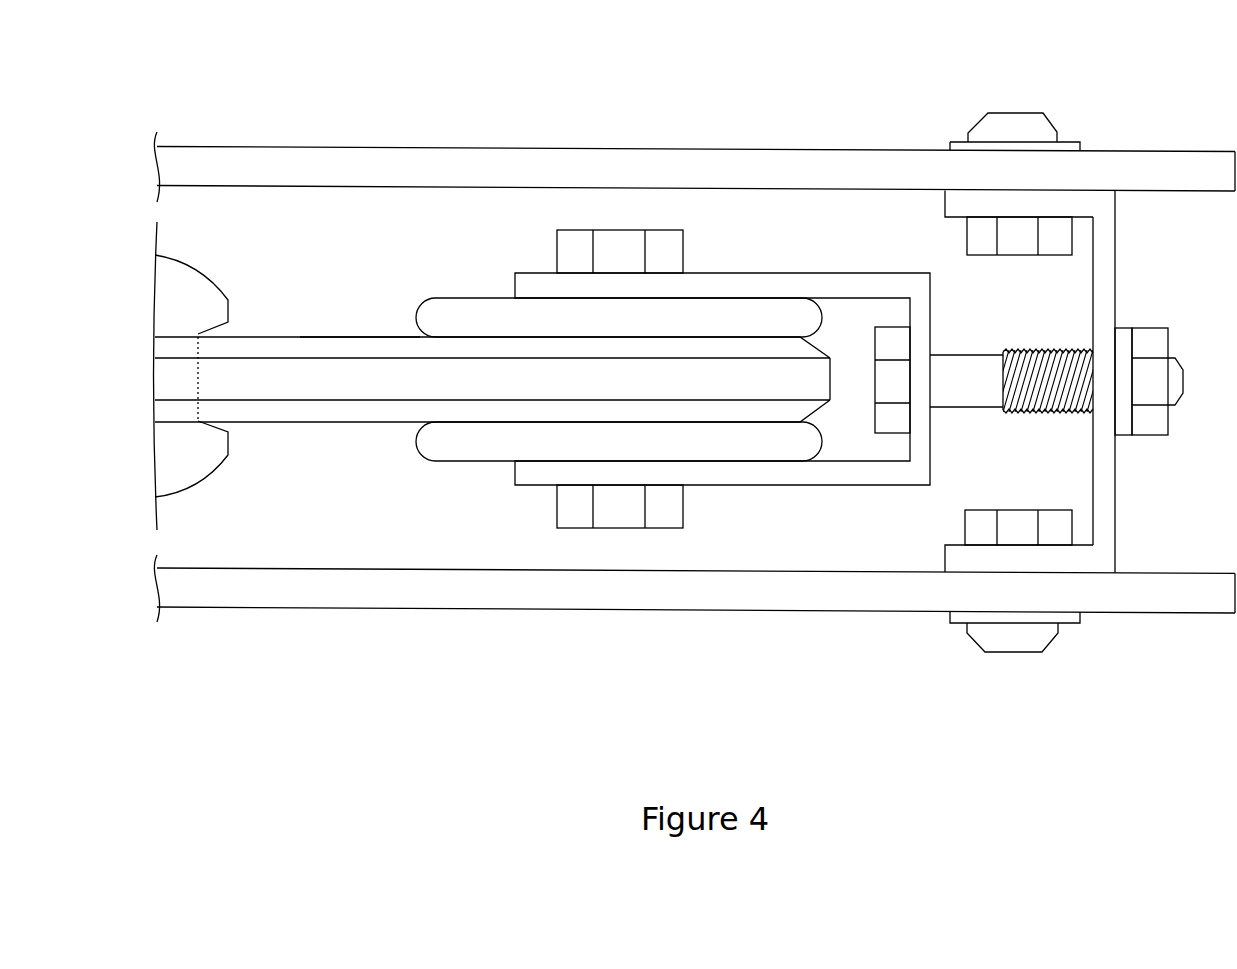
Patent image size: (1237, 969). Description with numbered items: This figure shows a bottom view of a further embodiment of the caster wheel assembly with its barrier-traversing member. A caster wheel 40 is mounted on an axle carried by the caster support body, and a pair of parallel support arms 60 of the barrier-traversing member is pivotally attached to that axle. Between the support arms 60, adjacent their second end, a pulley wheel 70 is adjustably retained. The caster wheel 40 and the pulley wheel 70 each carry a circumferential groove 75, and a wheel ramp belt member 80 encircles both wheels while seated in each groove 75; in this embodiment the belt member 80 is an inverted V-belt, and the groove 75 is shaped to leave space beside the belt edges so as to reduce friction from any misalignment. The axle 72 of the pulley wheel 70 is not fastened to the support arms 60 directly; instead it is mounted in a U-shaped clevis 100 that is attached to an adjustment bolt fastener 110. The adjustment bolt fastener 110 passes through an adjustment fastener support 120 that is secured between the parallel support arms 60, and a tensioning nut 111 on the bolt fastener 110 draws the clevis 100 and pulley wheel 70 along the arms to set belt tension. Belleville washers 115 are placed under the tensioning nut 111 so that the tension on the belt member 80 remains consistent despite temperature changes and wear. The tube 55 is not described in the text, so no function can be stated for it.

The caster wheel 40 is at (177, 278).
The tube 55 is at (368, 382).
The parallel support arms 60 is at (448, 173).
The pulley wheel 70 is at (658, 320).
The axle of the pulley wheel 72 is at (613, 257).
The circumferential groove 75 is at (232, 331).
The wheel ramp belt member 80 is at (337, 347).
The U-shaped clevis 100 is at (908, 290).
The adjustment bolt fastener 110 is at (1043, 382).
The tensioning nut 111 is at (1150, 425).
The Belleville washers 115 is at (1124, 347).
The adjustment fastener support 120 is at (1015, 125).